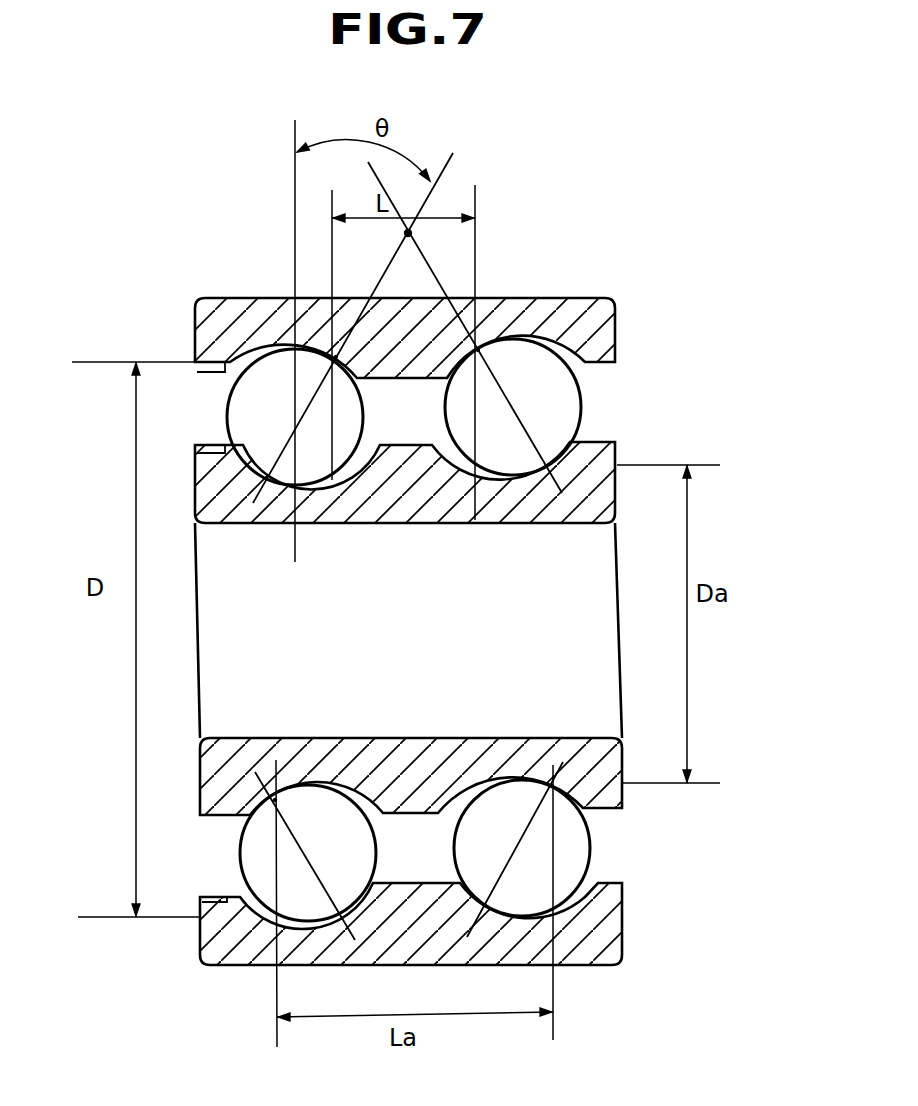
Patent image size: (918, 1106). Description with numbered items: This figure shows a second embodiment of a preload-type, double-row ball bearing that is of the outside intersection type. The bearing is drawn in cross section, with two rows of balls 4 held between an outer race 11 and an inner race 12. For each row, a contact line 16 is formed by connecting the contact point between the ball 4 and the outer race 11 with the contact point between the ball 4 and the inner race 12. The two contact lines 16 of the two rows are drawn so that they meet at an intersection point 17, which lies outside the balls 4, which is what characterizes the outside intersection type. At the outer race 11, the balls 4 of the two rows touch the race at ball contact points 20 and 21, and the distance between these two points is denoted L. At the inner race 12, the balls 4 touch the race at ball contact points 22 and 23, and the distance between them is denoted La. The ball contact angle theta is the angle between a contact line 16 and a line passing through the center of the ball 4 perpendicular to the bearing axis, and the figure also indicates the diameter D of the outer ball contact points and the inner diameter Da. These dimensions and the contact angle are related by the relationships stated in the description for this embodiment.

The ball 4 is at (563, 387).
The outer race 11 is at (585, 302).
The inner race 12 is at (459, 508).
The contact line 16 is at (448, 172).
The intersection point 17 is at (410, 233).
The ball contact point 20 is at (342, 355).
The ball contact point 21 is at (463, 339).
The ball contact point 22 is at (276, 800).
The ball contact point 23 is at (552, 786).